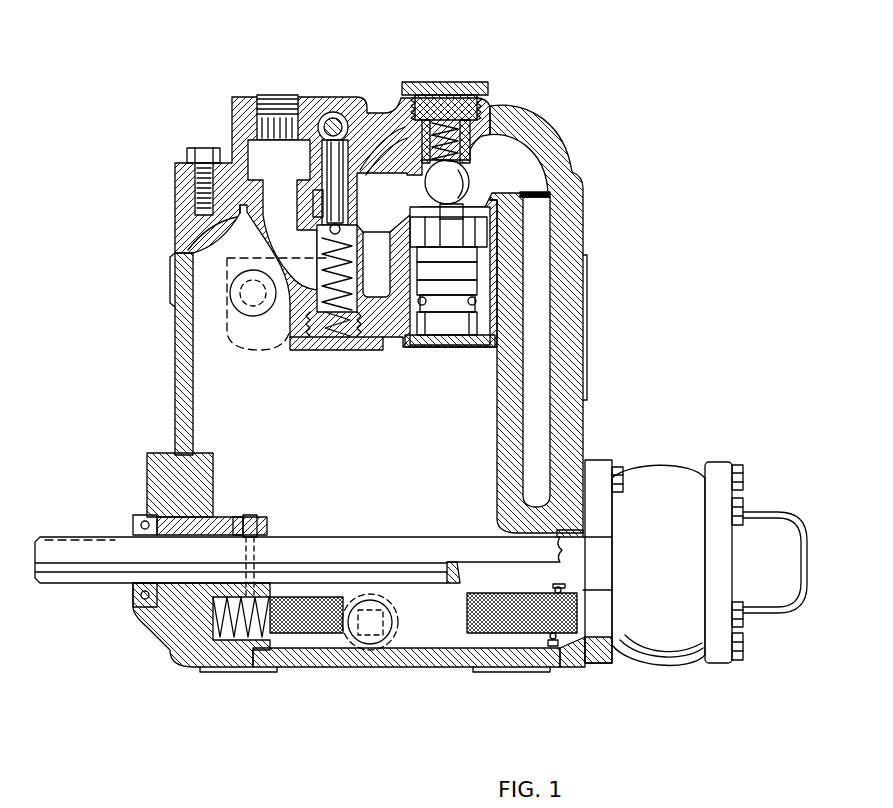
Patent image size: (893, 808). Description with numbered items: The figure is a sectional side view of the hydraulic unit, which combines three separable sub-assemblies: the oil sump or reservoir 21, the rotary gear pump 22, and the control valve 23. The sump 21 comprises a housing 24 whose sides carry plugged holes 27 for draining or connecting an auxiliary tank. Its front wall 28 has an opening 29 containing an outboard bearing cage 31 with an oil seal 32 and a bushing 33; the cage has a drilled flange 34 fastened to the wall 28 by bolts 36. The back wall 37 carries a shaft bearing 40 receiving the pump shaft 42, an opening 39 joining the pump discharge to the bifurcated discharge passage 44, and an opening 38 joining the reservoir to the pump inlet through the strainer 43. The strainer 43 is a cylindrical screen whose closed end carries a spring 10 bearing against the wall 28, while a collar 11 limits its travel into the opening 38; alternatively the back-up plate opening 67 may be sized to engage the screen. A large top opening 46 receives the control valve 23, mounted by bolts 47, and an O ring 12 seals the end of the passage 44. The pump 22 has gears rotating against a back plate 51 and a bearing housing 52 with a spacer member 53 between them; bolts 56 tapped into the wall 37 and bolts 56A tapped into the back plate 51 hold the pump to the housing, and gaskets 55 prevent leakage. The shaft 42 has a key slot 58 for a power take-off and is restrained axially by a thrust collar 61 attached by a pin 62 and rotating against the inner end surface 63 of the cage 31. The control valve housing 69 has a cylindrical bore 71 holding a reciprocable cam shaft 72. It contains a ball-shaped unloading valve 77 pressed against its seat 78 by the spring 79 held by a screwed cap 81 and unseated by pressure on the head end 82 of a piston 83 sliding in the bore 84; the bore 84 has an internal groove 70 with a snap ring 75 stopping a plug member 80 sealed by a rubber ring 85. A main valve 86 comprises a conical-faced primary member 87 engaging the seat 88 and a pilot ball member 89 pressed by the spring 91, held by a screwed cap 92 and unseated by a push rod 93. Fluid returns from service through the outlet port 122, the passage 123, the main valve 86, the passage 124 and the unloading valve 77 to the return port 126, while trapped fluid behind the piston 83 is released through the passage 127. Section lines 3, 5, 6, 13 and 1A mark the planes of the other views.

The spring 10 is at (267, 630).
The collar 11 is at (557, 645).
The O ring 12 is at (568, 178).
The section line 13 is at (462, 500).
The section line 1A is at (808, 427).
The oil sump or reservoir 21 is at (165, 385).
The rotary gear pump 22 is at (696, 576).
The control valve 23 is at (443, 68).
The housing 24 is at (418, 667).
The plugged holes 27 is at (388, 631).
The front wall 28 is at (182, 327).
The opening 29 is at (215, 522).
The section line 3 is at (333, 50).
The outboard bearing cage 31 is at (205, 625).
The oil seal 32 is at (138, 598).
The bushing 33 is at (241, 621).
The drilled flange 34 is at (170, 625).
The bolts 36 is at (135, 512).
The back wall 37 is at (575, 368).
The opening 38 is at (553, 646).
The opening 39 is at (543, 497).
The shaft bearing 40 is at (557, 534).
The pump shaft 42 is at (390, 537).
The strainer 43 is at (480, 635).
The bifurcated discharge passage 44 is at (540, 418).
The large opening 46 is at (185, 245).
The bolts 47 is at (203, 150).
The section line 5 is at (652, 433).
The back plate 51 is at (610, 655).
The bearing housing 52 is at (780, 613).
The spacer member 53 is at (685, 470).
The gaskets 55 is at (612, 515).
The bolts 56 is at (617, 470).
The bolts 56A is at (740, 470).
The key slot 58 is at (80, 538).
The section line 6 is at (572, 433).
The thrust collar 61 is at (268, 515).
The pin 62 is at (262, 525).
The inner end surface 63 is at (255, 515).
The back-up plate opening 67 is at (597, 633).
The housing 69 is at (250, 245).
The internal groove 70 is at (410, 352).
The cylindrical bore 71 is at (330, 115).
The cam shaft 72 is at (337, 112).
The snap ring 75 is at (430, 348).
The unloading valve 77 is at (465, 170).
The seat 78 is at (430, 196).
The spring 79 is at (505, 137).
The plug member 80 is at (450, 325).
The screwed cap 81 is at (478, 85).
The head end 82 is at (435, 318).
The piston 83 is at (455, 283).
The bore 84 is at (452, 268).
The rubber ring 85 is at (470, 318).
The main valve 86 is at (363, 276).
The primary member 87 is at (318, 255).
The seat 88 is at (357, 249).
The pilot ball member 89 is at (343, 222).
The spring 91 is at (315, 350).
The screwed cap 92 is at (325, 350).
The push rod 93 is at (345, 197).
The outlet port 122 is at (275, 100).
The passage 123 is at (279, 175).
The passage 124 is at (392, 130).
The return port 126 is at (465, 232).
The passage 127 is at (480, 310).